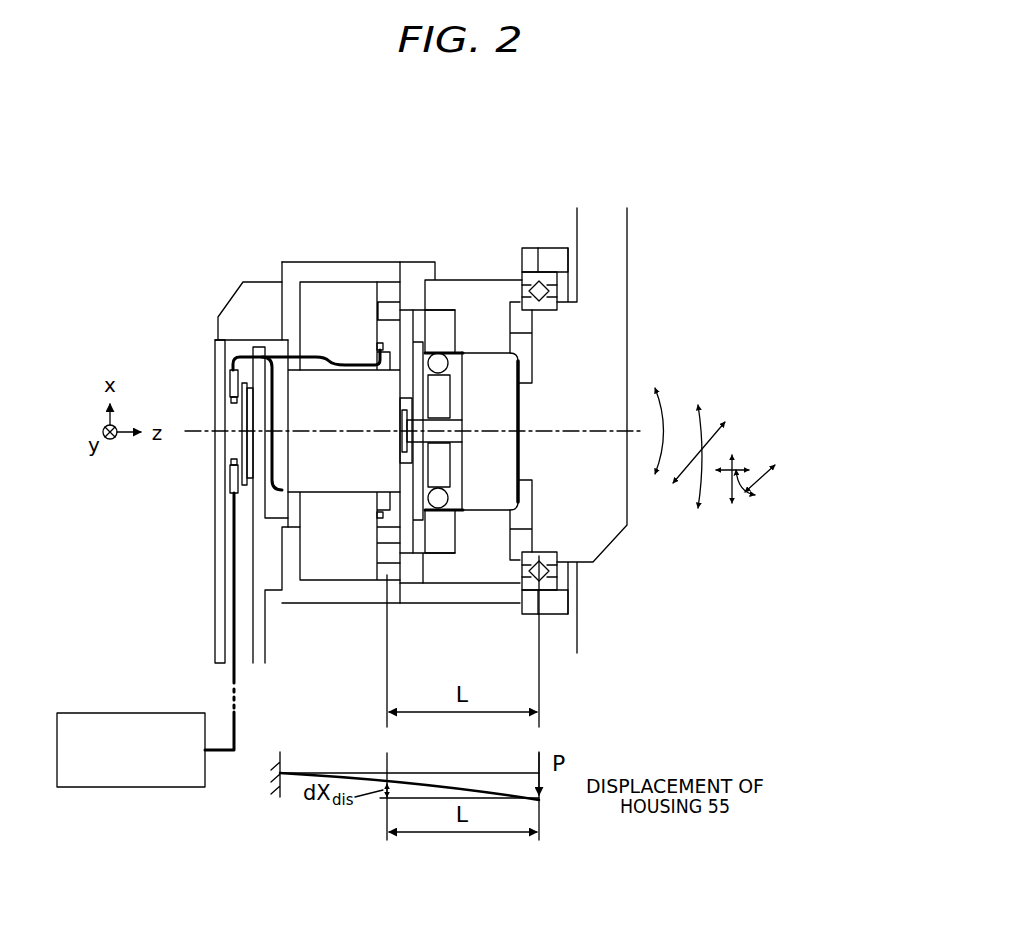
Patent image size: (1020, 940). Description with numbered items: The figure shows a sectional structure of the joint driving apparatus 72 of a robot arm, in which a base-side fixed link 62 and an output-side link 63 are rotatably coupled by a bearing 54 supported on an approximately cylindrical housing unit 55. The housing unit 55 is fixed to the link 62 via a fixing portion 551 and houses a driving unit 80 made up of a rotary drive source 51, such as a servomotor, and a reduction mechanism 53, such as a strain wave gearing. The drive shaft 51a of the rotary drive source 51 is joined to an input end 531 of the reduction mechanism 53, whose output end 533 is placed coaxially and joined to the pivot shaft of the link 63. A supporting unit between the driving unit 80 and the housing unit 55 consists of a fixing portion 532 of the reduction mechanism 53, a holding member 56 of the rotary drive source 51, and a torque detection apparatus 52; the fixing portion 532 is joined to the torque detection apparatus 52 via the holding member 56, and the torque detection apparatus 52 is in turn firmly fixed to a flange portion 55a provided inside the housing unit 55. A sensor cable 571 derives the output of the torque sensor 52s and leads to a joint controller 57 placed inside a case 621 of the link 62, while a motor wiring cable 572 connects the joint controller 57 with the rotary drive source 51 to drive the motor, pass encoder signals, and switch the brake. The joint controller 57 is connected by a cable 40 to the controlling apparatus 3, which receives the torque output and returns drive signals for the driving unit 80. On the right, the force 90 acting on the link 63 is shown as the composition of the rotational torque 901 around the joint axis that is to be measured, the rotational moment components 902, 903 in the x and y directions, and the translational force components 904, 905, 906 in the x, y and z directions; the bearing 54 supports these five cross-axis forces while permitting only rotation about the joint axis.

The joint driving apparatus 72 is at (157, 182).
The driving unit 80 is at (332, 162).
The rotary drive source 51 is at (337, 383).
The reduction mechanism 53 is at (542, 199).
The sensor cable 571 is at (315, 350).
The holding member 56 is at (416, 306).
The fixing portion of the reduction mechanism 532 is at (441, 315).
The input end 531 is at (446, 377).
The output end 533 is at (498, 363).
The torque sensor 52s is at (364, 342).
The link 63 is at (628, 244).
The link 62 is at (232, 306).
The motor wiring cable 572 is at (273, 415).
The joint controller 57 is at (237, 455).
The drive shaft 51a is at (459, 418).
The rotational torque 901 is at (665, 388).
The rotational moment component 903 is at (700, 418).
The rotational moment component 902 is at (718, 438).
The translational force component 904 is at (734, 457).
The translational force component 905 is at (764, 477).
The translational force component 906 is at (750, 488).
The force 90 is at (740, 325).
The case 621 is at (216, 563).
The cable 40 is at (233, 627).
The controlling apparatus 3 is at (118, 713).
The fixing portion 551 is at (286, 590).
The torque detection apparatus 52 is at (380, 577).
The flange portion 55a is at (408, 583).
The housing unit 55 is at (455, 593).
The bearing 54 is at (551, 590).